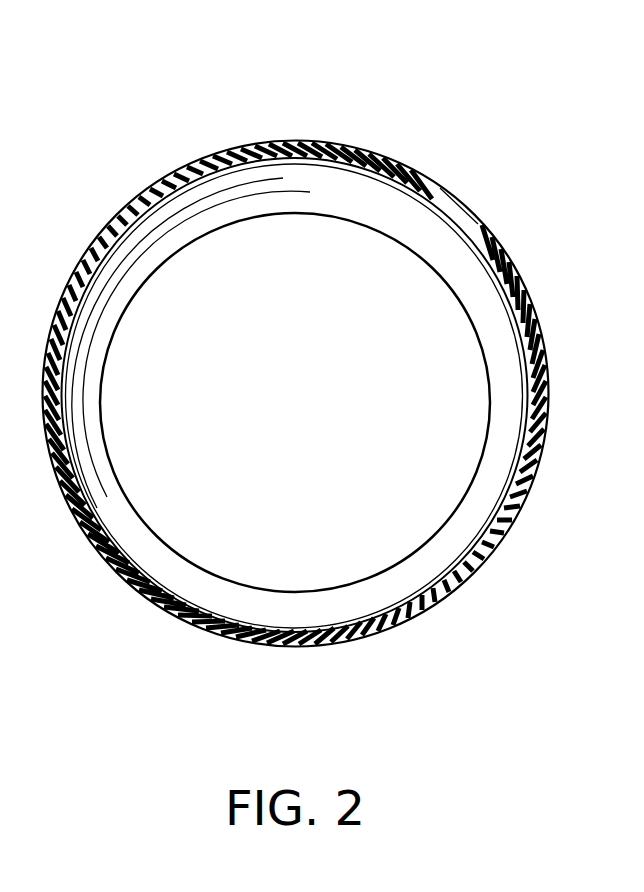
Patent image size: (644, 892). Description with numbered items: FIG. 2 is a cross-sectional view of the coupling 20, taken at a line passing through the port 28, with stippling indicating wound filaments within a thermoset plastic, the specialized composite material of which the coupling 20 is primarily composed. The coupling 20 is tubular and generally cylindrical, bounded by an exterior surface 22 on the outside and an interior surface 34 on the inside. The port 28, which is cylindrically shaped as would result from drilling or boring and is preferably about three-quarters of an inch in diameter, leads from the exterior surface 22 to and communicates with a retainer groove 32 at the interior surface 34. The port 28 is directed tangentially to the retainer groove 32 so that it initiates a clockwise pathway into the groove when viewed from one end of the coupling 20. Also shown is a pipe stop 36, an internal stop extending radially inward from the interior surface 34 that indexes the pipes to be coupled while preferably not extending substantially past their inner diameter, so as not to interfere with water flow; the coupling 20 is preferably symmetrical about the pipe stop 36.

The coupling 20 is at (387, 156).
The exterior surface 22 is at (526, 294).
The port 28 is at (458, 212).
The retainer groove 32 is at (427, 198).
The interior surface 34 is at (117, 240).
The pipe stop 36 is at (487, 313).